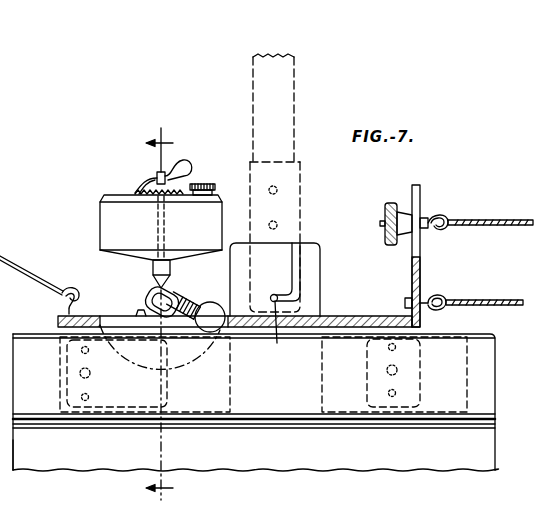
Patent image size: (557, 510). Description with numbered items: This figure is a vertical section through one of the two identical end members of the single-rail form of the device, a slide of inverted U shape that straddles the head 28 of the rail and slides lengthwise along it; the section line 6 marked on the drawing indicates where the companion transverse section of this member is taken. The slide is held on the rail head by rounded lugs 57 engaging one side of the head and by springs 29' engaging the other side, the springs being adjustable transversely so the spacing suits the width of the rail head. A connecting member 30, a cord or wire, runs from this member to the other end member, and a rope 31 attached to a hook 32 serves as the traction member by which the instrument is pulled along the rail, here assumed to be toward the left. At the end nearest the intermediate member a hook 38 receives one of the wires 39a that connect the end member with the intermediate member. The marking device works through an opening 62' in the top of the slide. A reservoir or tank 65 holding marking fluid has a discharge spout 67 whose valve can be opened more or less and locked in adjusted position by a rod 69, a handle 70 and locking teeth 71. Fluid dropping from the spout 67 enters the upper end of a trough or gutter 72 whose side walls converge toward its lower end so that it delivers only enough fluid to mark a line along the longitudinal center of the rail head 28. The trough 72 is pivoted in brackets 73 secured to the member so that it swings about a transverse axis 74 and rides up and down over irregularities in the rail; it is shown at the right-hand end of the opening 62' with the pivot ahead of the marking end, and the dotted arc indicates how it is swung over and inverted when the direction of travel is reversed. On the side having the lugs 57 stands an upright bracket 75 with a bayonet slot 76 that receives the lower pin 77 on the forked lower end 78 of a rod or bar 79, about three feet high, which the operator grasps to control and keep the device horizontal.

The section line 6— 6 is at (159, 311).
The rail head 28 is at (483, 440).
The springs 29' is at (274, 402).
The connecting member 30 is at (507, 228).
The rope 31 is at (26, 273).
The hook 32 is at (60, 302).
The hook 38 is at (450, 298).
The wires 39a is at (497, 314).
The rounded lugs 57 is at (60, 383).
The opening 62' is at (235, 308).
The reservoir or tank 65 is at (161, 222).
The discharge spout 67 is at (153, 278).
The rod 69 is at (166, 220).
The handle 70 is at (188, 165).
The locking teeth 71 is at (137, 188).
The trough or gutter 72 is at (205, 332).
The brackets 73 is at (150, 300).
The pivot axis 74 is at (176, 298).
The upright bracket 75 is at (320, 265).
The bayonet slot 76 is at (298, 276).
The lower pin 77 is at (287, 330).
The forked lower end 78 is at (297, 212).
The rod or bar 79 is at (290, 73).